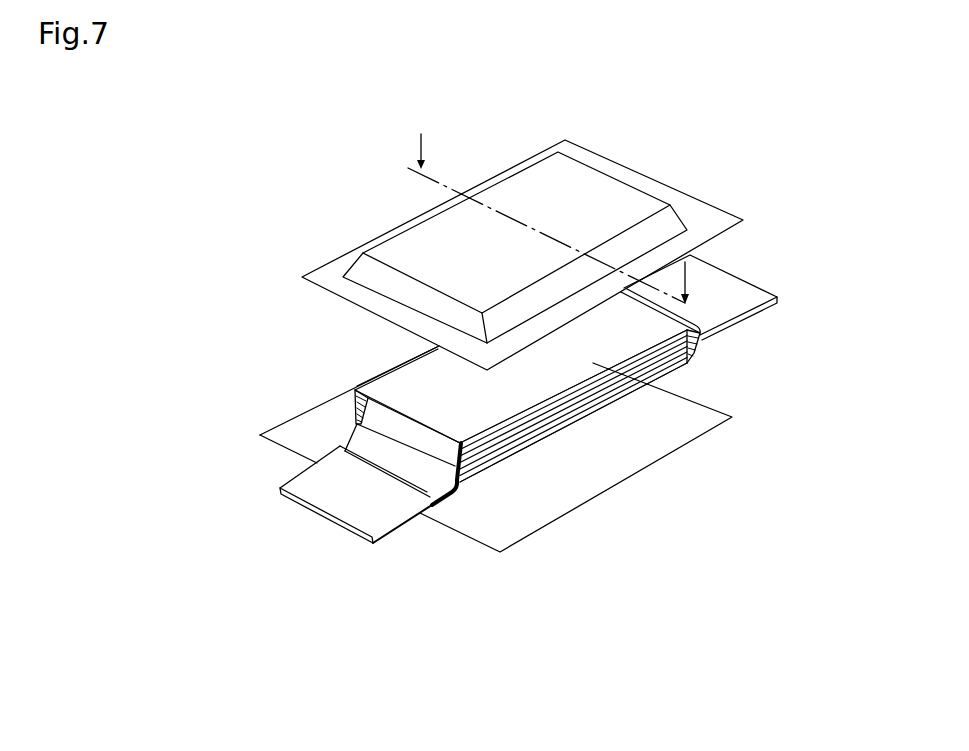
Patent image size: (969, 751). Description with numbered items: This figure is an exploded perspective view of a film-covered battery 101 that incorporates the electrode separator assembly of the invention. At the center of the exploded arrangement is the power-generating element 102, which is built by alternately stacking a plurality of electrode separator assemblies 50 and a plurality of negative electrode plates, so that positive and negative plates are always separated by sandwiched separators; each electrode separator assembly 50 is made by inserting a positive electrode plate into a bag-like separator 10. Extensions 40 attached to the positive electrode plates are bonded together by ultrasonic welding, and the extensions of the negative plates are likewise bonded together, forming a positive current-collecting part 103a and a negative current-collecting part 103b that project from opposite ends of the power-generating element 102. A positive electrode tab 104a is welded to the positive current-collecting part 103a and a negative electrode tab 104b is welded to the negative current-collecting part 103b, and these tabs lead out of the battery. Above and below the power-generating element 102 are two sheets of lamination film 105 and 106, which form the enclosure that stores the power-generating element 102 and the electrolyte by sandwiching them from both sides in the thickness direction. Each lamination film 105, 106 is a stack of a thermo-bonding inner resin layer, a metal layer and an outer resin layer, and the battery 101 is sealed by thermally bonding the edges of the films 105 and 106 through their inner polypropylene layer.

The film-covered battery 101 is at (315, 222).
The lamination film 105 is at (668, 147).
The lamination film 106 is at (562, 498).
The bag-like separator 10 is at (690, 348).
The electrode separator assembly 50 is at (685, 365).
The power-generating element 102 is at (612, 370).
The positive current-collecting part 103a is at (354, 448).
The negative current-collecting part 103b is at (700, 327).
The positive electrode tab 104a is at (340, 501).
The negative electrode tab 104b is at (778, 250).
The extensions 40 is at (457, 484).